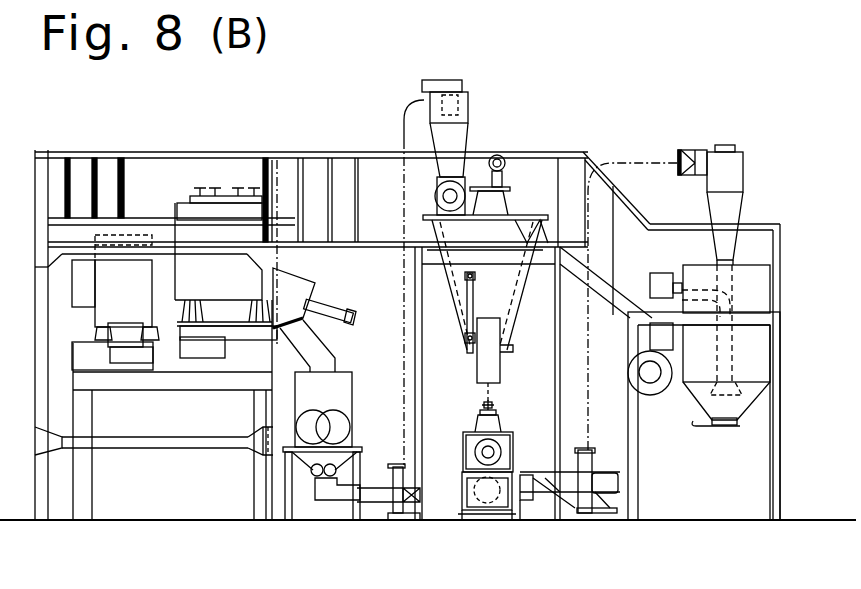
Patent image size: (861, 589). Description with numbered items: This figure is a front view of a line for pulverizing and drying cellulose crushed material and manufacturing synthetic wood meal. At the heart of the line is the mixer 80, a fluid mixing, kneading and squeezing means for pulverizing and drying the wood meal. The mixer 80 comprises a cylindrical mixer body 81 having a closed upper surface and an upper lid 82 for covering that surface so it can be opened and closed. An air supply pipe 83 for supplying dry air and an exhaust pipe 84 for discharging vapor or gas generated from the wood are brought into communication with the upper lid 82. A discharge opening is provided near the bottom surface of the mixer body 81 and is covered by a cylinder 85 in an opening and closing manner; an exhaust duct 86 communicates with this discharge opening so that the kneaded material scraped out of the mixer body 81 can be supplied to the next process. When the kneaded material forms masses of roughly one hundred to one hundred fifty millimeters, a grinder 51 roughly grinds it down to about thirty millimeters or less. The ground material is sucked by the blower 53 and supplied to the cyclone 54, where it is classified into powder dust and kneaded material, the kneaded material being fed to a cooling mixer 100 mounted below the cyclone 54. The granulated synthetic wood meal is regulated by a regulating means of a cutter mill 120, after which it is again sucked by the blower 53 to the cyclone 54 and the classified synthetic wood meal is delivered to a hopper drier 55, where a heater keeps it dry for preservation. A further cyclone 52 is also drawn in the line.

The mixer 80 is at (185, 200).
The mixer body 81 is at (178, 203).
The upper lid 82 is at (278, 240).
The air supply pipe 83 is at (242, 188).
The exhaust pipe 84 is at (218, 188).
The cylinder 85 is at (337, 312).
The exhaust duct 86 is at (317, 350).
The grinder 51 is at (338, 390).
The cyclone 52 is at (440, 131).
The blower 53 is at (603, 508).
The cyclone 54 is at (707, 175).
The hopper drier 55 is at (753, 350).
The cooling mixer 100 is at (457, 288).
The cutter mill 120 is at (482, 507).